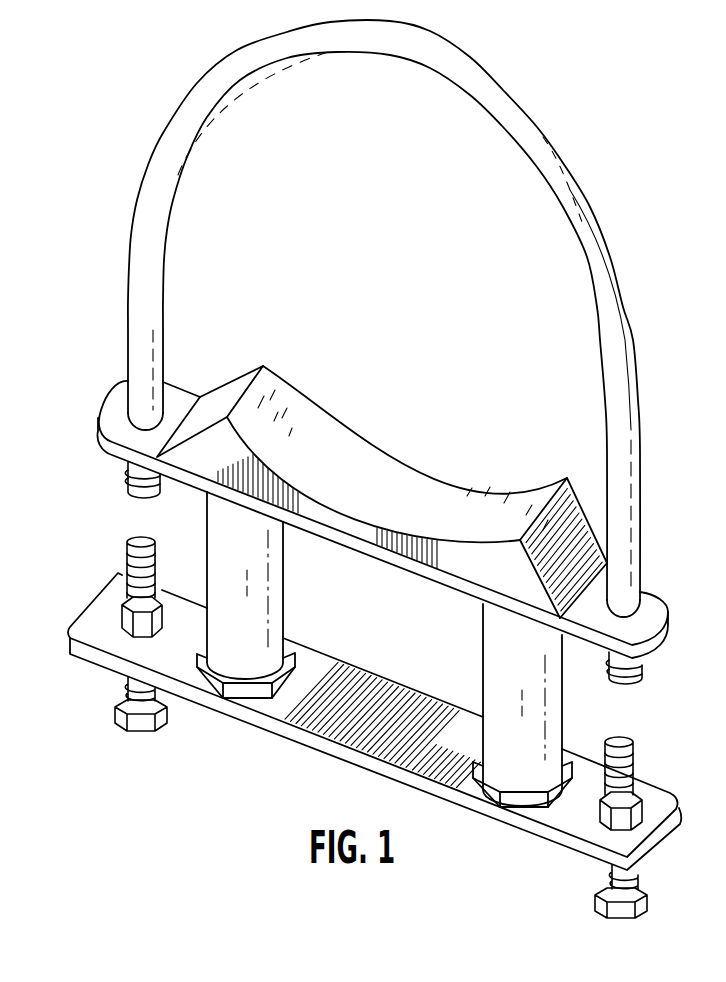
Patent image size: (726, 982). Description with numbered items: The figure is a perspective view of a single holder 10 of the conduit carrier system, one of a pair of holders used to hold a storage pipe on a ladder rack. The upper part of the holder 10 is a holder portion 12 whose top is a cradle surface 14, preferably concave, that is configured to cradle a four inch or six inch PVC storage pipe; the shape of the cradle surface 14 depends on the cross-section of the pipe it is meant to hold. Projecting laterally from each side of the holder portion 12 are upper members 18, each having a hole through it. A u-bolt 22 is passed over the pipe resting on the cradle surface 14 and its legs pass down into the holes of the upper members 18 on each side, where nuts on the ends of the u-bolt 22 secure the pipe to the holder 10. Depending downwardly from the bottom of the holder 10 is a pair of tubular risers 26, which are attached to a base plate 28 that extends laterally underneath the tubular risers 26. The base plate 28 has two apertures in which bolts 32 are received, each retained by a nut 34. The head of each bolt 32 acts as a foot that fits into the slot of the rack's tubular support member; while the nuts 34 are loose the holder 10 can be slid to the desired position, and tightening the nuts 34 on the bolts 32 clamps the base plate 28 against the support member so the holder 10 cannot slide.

The holder 10 is at (76, 148).
The holder portion 12 is at (365, 530).
The cradle surface 14 is at (320, 437).
The upper members 18 is at (117, 410).
The u-bolt 22 is at (592, 207).
The tubular risers 26 is at (220, 548).
The base plate 28 is at (337, 752).
The bolts 32 is at (120, 682).
The nut 34 is at (120, 610).